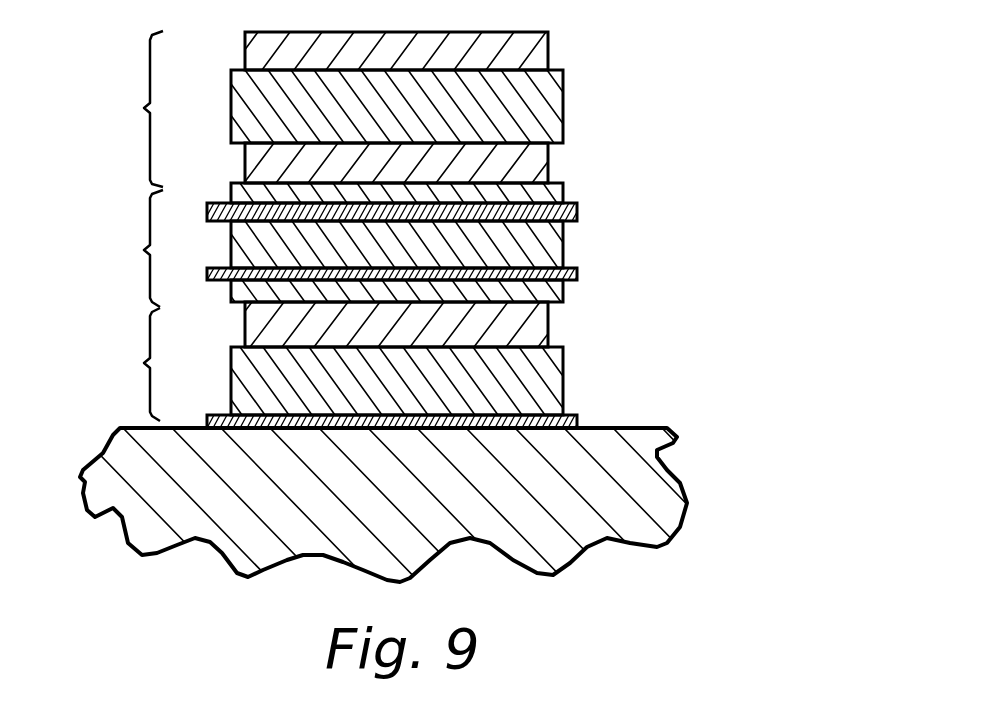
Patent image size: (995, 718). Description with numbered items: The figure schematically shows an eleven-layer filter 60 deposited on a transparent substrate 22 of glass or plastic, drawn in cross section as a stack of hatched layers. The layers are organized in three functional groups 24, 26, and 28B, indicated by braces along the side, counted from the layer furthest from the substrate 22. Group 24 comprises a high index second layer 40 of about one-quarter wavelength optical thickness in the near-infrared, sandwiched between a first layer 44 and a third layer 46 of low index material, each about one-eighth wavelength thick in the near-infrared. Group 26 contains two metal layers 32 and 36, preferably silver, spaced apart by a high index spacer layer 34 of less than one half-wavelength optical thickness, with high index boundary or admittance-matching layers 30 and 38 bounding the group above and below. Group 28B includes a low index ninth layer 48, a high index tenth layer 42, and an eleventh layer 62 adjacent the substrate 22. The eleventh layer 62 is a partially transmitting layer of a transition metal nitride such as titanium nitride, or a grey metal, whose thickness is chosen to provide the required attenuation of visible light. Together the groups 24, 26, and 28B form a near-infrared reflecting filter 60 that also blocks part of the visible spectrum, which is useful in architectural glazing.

The substrate 22 is at (695, 478).
The first functional group 24 is at (143, 108).
The second functional group 26 is at (143, 250).
The third functional group 28B is at (143, 363).
The boundary layer 30 is at (572, 193).
The metal layer 32 is at (581, 212).
The spacer layer 34 is at (572, 242).
The metal layer 36 is at (583, 272).
The boundary layer 38 is at (572, 293).
The second layer 40 is at (572, 102).
The tenth layer 42 is at (575, 375).
The first layer 44 is at (552, 53).
The third layer 46 is at (555, 162).
The ninth layer 48 is at (556, 322).
The eleven-layer filter 60 is at (520, 218).
The eleventh layer 62 is at (584, 420).